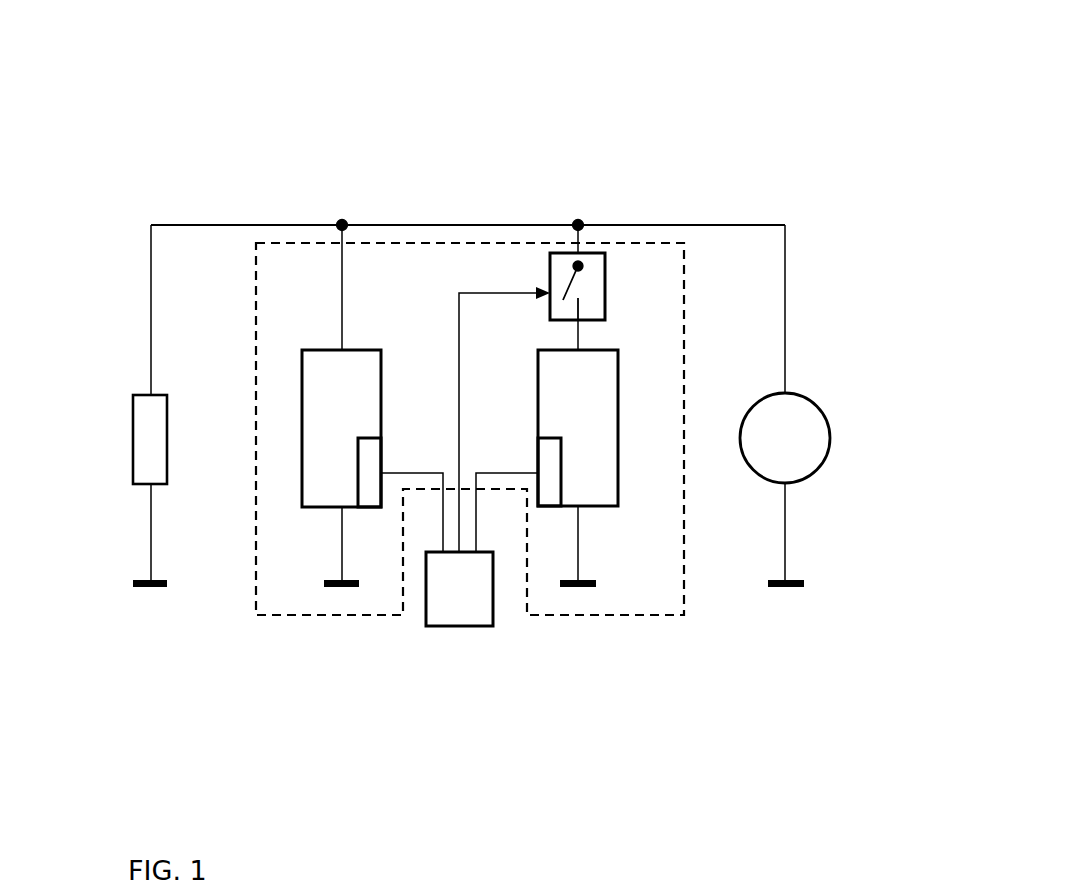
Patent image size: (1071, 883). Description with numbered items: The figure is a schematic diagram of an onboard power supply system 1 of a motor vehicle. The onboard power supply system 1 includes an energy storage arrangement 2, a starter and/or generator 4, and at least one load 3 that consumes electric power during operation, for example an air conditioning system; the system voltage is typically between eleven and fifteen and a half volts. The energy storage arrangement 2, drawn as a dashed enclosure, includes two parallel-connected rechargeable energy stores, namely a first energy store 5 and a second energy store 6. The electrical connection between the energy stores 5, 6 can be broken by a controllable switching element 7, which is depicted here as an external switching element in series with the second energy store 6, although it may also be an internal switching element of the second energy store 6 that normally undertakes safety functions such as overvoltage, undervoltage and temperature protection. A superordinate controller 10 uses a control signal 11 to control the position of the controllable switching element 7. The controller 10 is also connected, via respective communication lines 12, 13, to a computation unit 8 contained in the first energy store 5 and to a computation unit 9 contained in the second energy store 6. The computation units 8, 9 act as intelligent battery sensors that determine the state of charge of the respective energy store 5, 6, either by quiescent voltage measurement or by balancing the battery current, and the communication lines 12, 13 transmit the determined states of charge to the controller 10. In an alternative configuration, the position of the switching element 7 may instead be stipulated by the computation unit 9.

The onboard power supply system 1 is at (686, 116).
The energy storage arrangement 2 is at (320, 616).
The load 3 is at (133, 436).
The starter and/or generator 4 is at (823, 462).
The first energy store 5 is at (381, 384).
The second energy store 6 is at (618, 402).
The controllable switching element 7 is at (605, 268).
The computation unit 8 is at (375, 468).
The computation unit 9 is at (541, 468).
The superordinate controller 10 is at (457, 627).
The control signal 11 is at (493, 293).
The communication line 12 is at (443, 499).
The communication line 13 is at (476, 499).